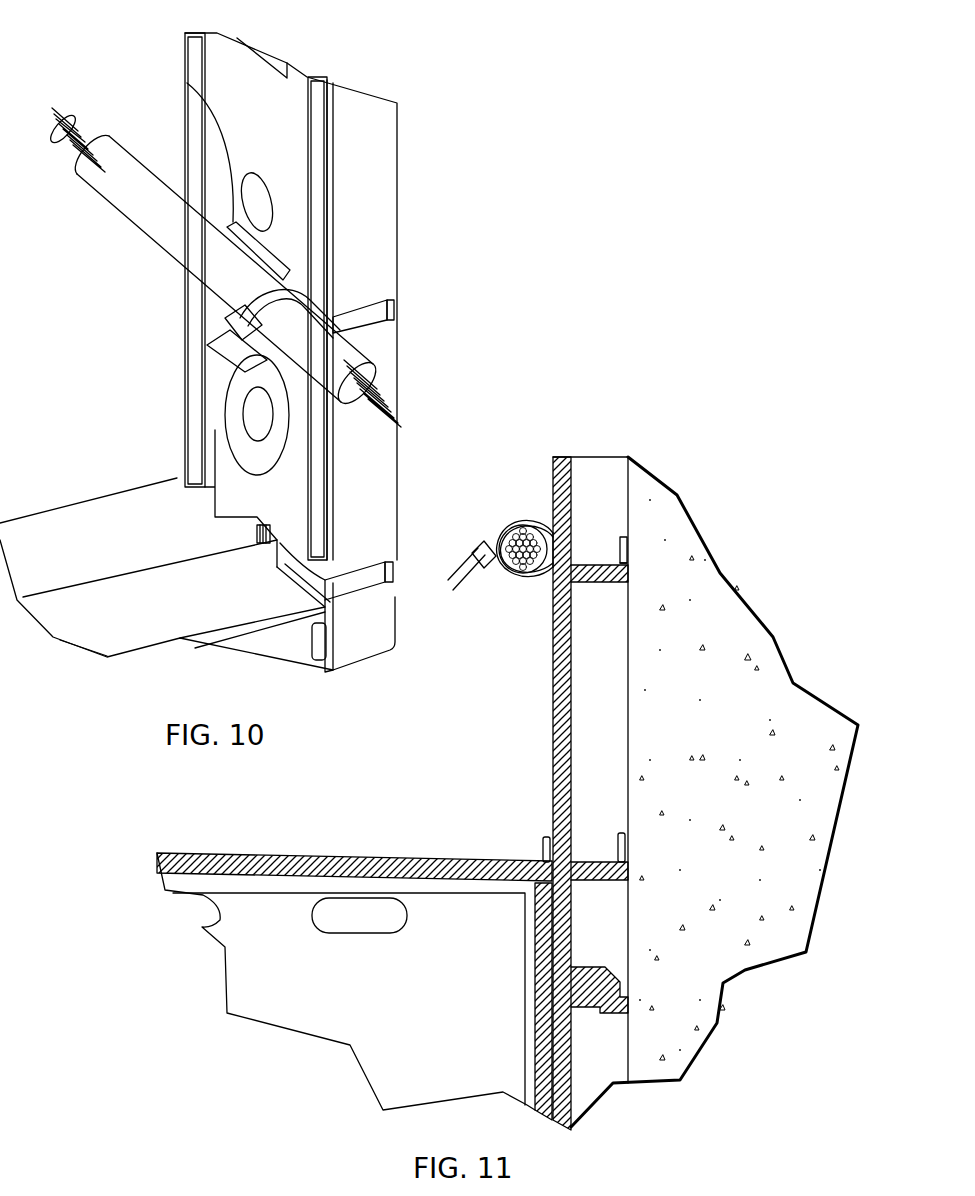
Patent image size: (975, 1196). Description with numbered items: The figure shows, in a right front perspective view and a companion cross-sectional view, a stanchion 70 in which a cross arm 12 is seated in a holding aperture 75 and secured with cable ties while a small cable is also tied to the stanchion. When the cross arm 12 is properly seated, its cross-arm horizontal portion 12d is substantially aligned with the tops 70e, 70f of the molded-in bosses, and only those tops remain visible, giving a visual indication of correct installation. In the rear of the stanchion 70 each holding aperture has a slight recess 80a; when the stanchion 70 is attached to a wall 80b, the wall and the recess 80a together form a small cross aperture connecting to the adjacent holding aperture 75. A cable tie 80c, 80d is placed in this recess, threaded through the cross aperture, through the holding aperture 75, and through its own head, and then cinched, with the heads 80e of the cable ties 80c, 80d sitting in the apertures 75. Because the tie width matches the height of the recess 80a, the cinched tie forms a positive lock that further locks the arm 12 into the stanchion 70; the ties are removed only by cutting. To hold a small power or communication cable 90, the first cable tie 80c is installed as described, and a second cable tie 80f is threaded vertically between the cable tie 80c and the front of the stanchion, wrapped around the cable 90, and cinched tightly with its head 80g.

In FIG. 10, the cross arm 12 is at (100, 497).
In FIG. 11, the cross arm 12 is at (354, 986).
In FIG. 10, the cross-arm horizontal portion 12d is at (172, 632).
In FIG. 10, the stanchion 70 is at (398, 135).
In FIG. 11, the stanchion 70 is at (553, 733).
In FIG. 10, the top of molded-in boss 70e is at (185, 483).
In FIG. 10, the top of molded-in boss 70f is at (350, 610).
In FIG. 10, the holding aperture 75 is at (190, 82).
In FIG. 10, the recess 80a is at (396, 305).
In FIG. 11, the recess 80a is at (630, 551).
In FIG. 11, the wall 80b is at (672, 505).
In FIG. 10, the first cable tie 80c is at (396, 318).
In FIG. 11, the first cable tie 80c is at (630, 566).
In FIG. 10, the cable tie 80d is at (393, 560).
In FIG. 11, the cable tie 80d is at (620, 840).
In FIG. 10, the cable tie head 80e is at (250, 556).
In FIG. 10, the second cable tie 80f is at (210, 333).
In FIG. 11, the second cable tie 80f is at (522, 525).
In FIG. 10, the head of second cable tie 80g is at (233, 318).
In FIG. 11, the head of second cable tie 80g is at (488, 567).
In FIG. 10, the cable 90 is at (125, 145).
In FIG. 11, the cable 90 is at (527, 576).